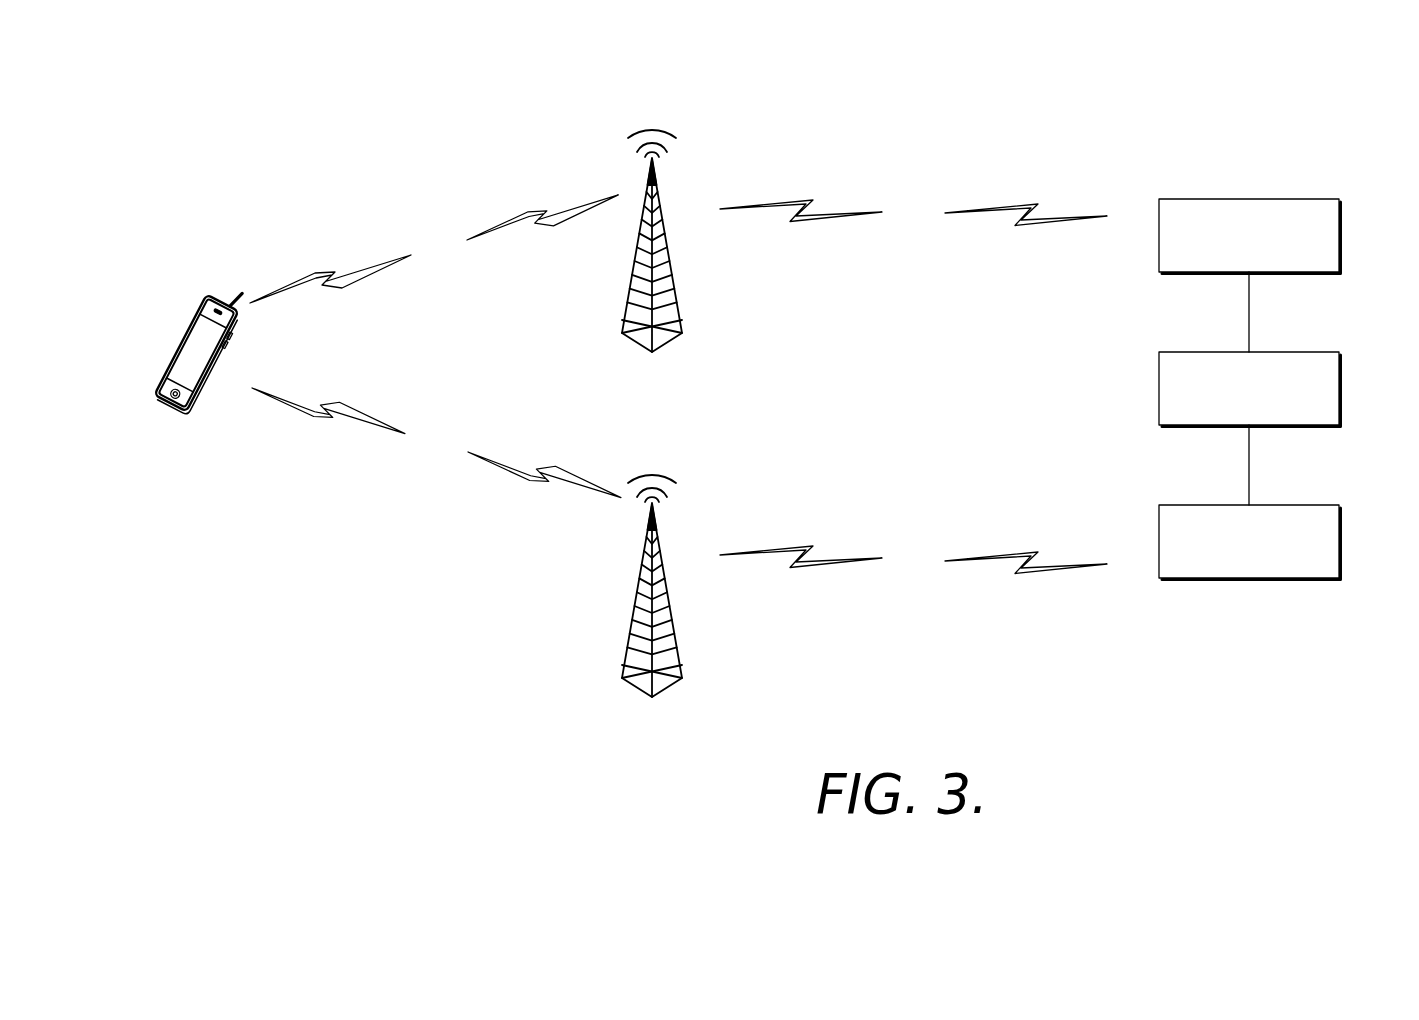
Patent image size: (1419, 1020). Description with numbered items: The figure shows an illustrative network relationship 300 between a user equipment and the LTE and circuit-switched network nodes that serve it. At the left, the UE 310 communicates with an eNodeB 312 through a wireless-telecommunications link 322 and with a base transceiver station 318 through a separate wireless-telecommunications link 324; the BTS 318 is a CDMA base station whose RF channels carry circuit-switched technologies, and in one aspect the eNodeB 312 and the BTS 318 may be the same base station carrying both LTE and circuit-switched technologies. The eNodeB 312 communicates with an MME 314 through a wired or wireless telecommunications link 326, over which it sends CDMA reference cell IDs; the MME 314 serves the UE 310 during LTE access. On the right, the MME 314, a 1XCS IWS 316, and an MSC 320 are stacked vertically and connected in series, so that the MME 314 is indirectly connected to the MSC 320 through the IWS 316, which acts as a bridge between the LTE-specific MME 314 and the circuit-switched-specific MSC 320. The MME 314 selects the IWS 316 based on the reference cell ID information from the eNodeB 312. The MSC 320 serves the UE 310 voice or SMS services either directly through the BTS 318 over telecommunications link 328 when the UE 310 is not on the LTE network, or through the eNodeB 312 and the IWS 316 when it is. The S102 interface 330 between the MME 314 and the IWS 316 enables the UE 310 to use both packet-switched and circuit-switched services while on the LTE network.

The network relationship 300 is at (250, 133).
The UE 310 is at (176, 342).
The eNodeB 312 is at (676, 286).
The MME 314 is at (1312, 199).
The 1XCS IWS 316 is at (1312, 352).
The base transceiver station 318 is at (632, 610).
The MSC 320 is at (1312, 505).
The wireless-telecommunications link 322 is at (243, 268).
The wireless-telecommunications link 324 is at (242, 437).
The telecommunications link 326 is at (728, 183).
The telecommunications link 328 is at (728, 613).
The S102 interface 330 is at (1325, 308).